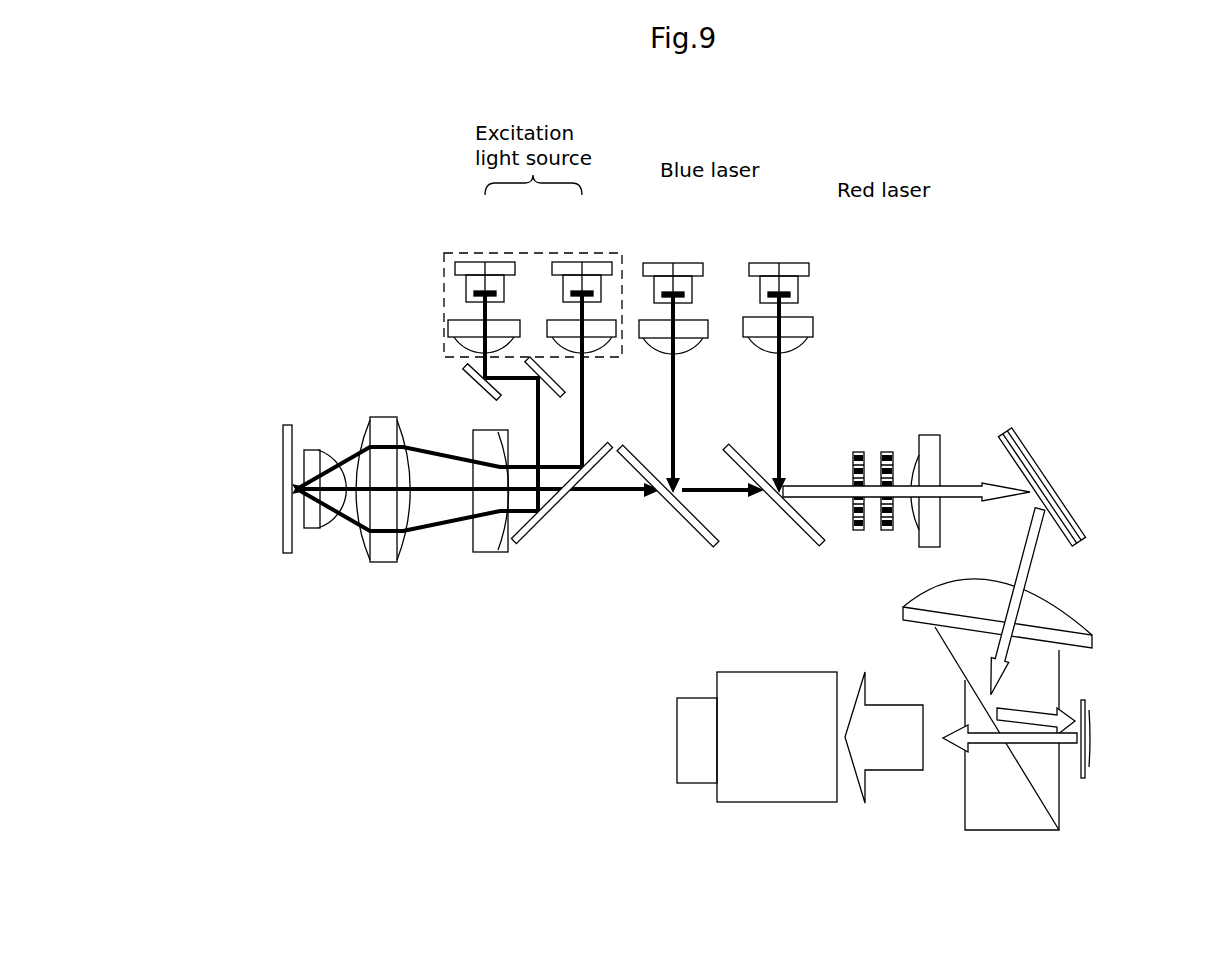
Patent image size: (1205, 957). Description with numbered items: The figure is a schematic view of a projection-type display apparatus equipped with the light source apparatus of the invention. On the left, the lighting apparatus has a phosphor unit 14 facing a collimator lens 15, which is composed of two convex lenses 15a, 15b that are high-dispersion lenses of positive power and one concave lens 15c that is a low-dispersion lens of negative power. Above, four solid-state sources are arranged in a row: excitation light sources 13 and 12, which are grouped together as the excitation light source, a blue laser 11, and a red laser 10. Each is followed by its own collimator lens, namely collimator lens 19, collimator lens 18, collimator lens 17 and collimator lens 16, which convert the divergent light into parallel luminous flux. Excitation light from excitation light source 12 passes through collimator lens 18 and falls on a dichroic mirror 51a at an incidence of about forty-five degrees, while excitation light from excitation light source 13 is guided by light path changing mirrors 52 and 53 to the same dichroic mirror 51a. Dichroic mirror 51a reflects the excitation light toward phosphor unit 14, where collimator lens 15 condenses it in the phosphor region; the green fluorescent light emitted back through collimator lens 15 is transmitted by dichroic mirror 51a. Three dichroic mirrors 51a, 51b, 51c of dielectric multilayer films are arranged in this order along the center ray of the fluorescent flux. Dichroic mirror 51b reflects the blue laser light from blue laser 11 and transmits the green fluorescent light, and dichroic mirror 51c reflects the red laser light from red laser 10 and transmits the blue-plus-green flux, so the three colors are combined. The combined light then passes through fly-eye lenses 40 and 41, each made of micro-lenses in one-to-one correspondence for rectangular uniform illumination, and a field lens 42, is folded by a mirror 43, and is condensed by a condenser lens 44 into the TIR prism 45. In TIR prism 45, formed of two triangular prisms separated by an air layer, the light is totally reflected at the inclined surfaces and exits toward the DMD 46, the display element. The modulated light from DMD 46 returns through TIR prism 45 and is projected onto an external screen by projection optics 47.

The red laser 10 is at (773, 262).
The blue laser 11 is at (658, 262).
The excitation light source 12 is at (603, 262).
The excitation light source 13 is at (467, 262).
The phosphor unit 14 is at (282, 425).
The collimator lens 15 is at (403, 553).
The convex lens 15a is at (306, 530).
The convex lens 15b is at (366, 553).
The concave lens 15c is at (477, 529).
The collimator lens 16 is at (814, 320).
The collimator lens 17 is at (708, 320).
The collimator lens 18 is at (617, 320).
The collimator lens 19 is at (452, 325).
The fly-eye lens 40 is at (858, 452).
The fly-eye lens 41 is at (887, 452).
The field lens 42 is at (932, 435).
The mirror 43 is at (1078, 522).
The condenser lens 44 is at (1077, 619).
The total internal reflection (TIR) prism 45 is at (1047, 830).
The DMD 46 is at (1090, 718).
The projection optics 47 is at (777, 803).
The dichroic mirror 51a is at (550, 512).
The dichroic mirror 51b is at (688, 514).
The dichroic mirror 51c is at (797, 530).
The light path changing mirror 52 is at (462, 380).
The light path changing mirror 53 is at (568, 387).